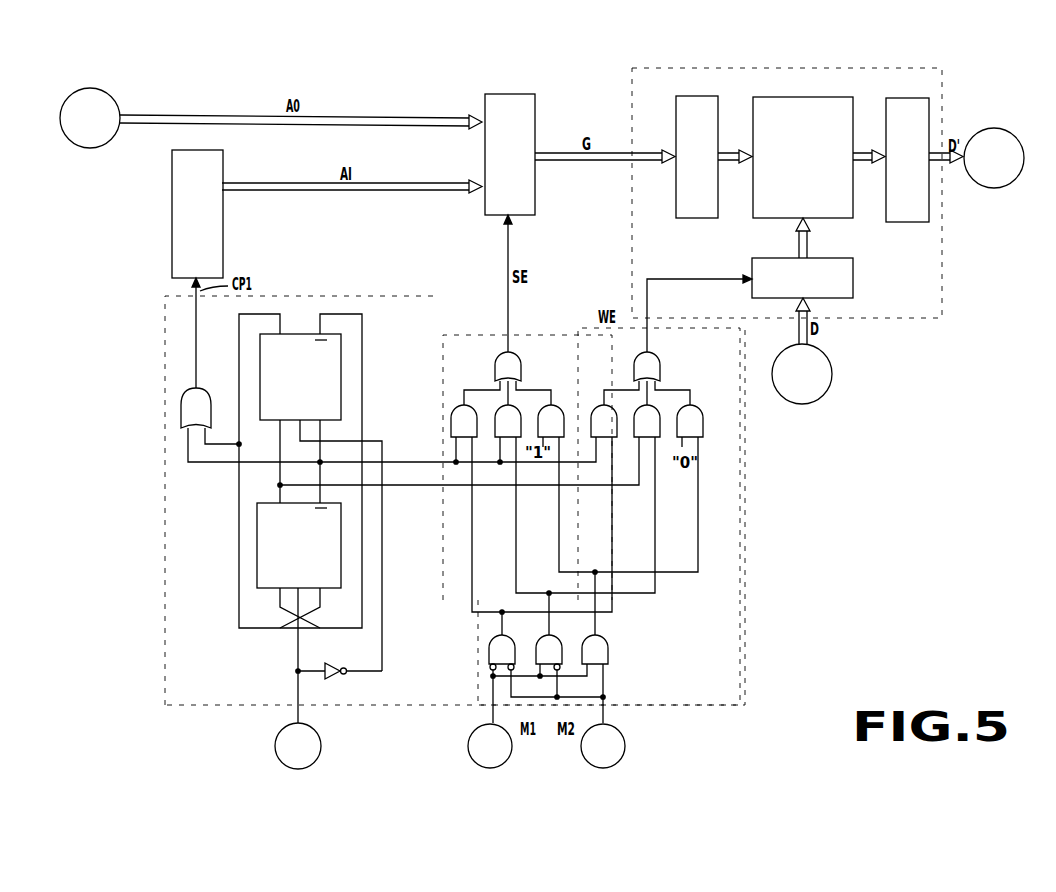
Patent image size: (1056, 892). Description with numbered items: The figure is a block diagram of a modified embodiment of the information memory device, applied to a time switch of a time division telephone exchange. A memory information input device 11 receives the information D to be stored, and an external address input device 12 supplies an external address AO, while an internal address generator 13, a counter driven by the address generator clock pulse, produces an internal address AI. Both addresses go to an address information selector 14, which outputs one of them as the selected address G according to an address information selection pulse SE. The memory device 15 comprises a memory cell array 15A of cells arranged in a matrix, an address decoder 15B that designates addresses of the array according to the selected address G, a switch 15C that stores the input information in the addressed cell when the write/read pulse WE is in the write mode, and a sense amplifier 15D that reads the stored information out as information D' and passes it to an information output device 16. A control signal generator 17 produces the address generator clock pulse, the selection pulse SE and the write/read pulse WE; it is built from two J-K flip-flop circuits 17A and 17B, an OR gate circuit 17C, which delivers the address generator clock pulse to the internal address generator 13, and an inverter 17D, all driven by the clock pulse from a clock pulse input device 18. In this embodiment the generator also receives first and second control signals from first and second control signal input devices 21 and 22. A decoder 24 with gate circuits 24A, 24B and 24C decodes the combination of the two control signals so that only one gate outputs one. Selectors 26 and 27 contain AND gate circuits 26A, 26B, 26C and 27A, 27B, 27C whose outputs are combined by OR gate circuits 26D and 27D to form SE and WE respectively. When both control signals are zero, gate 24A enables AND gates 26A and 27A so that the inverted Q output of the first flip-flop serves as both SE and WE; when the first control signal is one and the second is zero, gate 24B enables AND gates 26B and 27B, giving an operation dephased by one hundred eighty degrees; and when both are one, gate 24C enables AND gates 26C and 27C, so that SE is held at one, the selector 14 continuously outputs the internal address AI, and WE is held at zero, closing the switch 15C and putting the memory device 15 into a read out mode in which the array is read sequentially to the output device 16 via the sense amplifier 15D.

The memory information input device 11 is at (832, 372).
The external address input device 12 is at (88, 149).
The internal address generator 13 is at (223, 259).
The address information selector 14 is at (535, 204).
The memory device 15 is at (792, 70).
The memory cell array 15A is at (762, 218).
The address decoder 15B is at (676, 207).
The switch 15C is at (853, 284).
The sense amplifier 15D is at (905, 222).
The information output device 16 is at (990, 188).
The control signal generator 17 is at (521, 500).
The J-K type flip-flop circuit 17A is at (240, 548).
The J-K type flip-flop circuit 17B is at (362, 374).
The OR gate circuit 17C is at (178, 410).
The inverter 17D is at (338, 666).
The clock pulse input device 18 is at (272, 746).
The first control signal input device 21 is at (468, 745).
The second control signal input device 22 is at (625, 746).
The decoder 24 is at (609, 652).
The gate circuit 24A is at (486, 650).
The gate circuit 24B is at (500, 640).
The gate circuit 24C is at (629, 644).
The selector 26 is at (445, 522).
The AND gate circuit 26A is at (449, 418).
The AND gate circuit 26B is at (466, 410).
The AND gate circuit 26C is at (548, 394).
The OR gate circuit 26D is at (494, 362).
The selector 27 is at (711, 464).
The AND gate circuit 27A is at (603, 404).
The AND gate circuit 27B is at (632, 392).
The AND gate circuit 27C is at (730, 400).
The OR gate circuit 27D is at (688, 403).